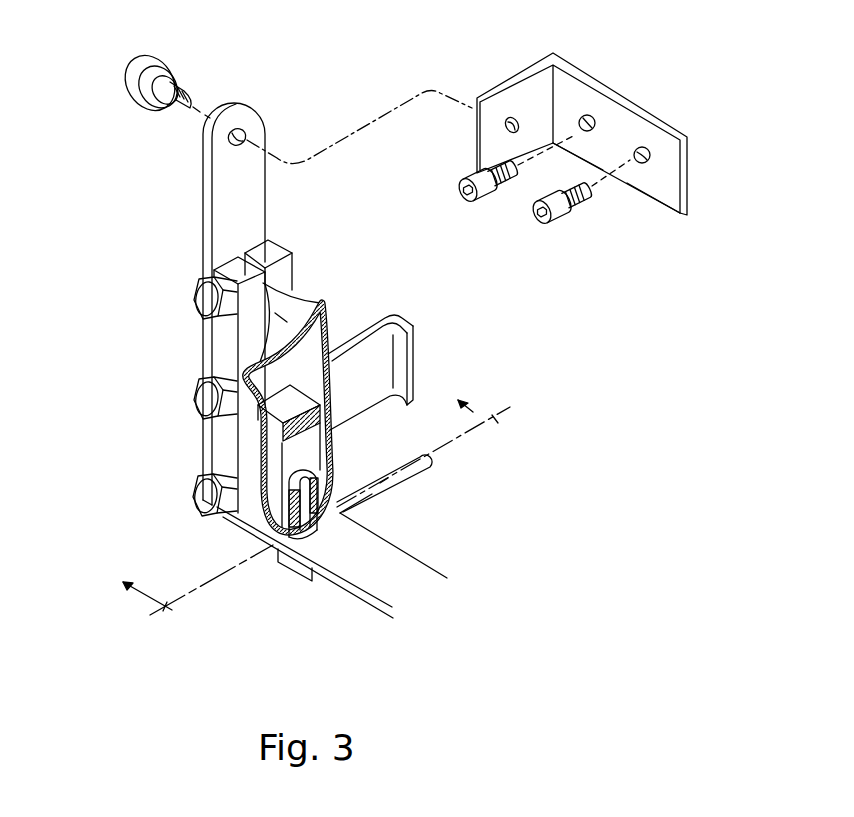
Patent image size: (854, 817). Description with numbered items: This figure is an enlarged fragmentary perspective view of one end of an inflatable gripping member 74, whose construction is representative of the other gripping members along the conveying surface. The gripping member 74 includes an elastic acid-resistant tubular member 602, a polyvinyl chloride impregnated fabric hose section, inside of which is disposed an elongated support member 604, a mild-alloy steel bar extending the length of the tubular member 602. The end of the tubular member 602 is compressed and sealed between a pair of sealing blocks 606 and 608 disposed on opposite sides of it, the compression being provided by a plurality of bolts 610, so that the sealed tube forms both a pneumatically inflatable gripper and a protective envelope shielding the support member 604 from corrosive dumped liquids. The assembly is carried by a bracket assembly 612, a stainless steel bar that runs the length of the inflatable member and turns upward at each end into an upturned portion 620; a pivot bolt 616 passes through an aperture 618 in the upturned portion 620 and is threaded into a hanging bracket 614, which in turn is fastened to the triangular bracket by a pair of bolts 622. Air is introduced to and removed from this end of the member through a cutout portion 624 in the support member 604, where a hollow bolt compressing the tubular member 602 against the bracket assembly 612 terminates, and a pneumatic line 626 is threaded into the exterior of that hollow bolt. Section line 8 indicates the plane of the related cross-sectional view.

The inflatable gripping member 74 is at (168, 302).
The elastic acid-resistant tubular member 602 is at (323, 302).
The elongated support member 604 is at (320, 418).
The sealing block 606 is at (237, 278).
The sealing block 608 is at (277, 250).
The bolts 610 is at (205, 488).
The bracket assembly 612 is at (410, 562).
The hanging bracket 614 is at (625, 115).
The pivot bolt 616 is at (138, 65).
The aperture 618 is at (243, 128).
The upturned portion 620 is at (218, 200).
The bolts 622 is at (532, 218).
The cutout portion 624 is at (302, 458).
The pneumatic line 626 is at (375, 505).
The section line 8 is at (316, 496).